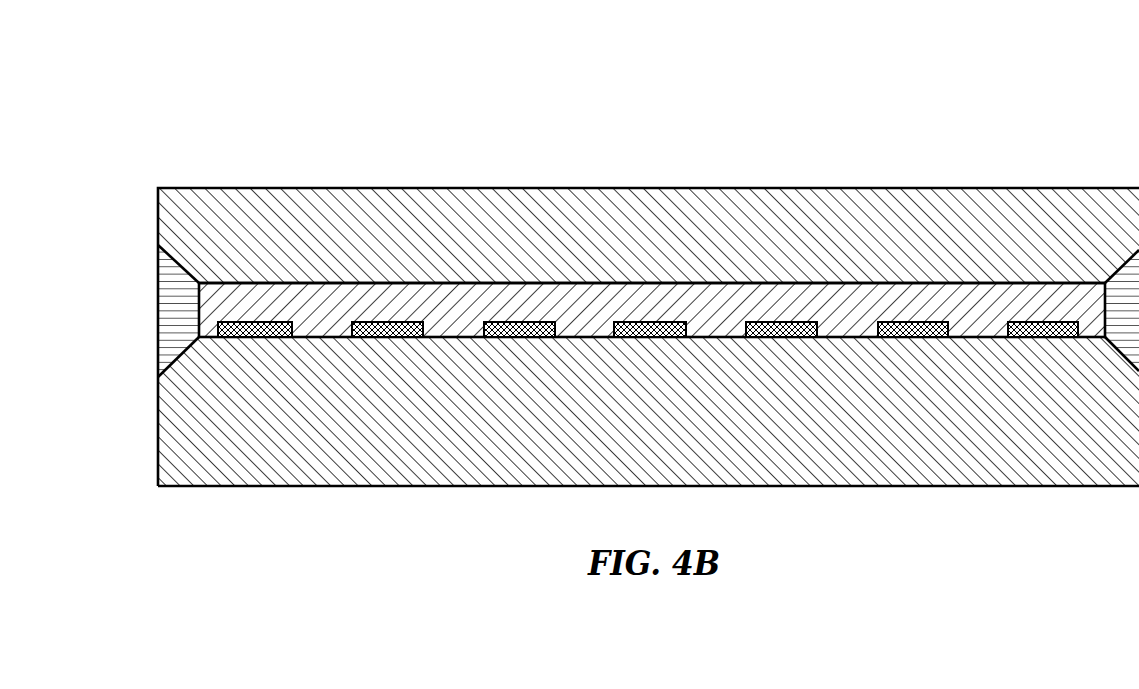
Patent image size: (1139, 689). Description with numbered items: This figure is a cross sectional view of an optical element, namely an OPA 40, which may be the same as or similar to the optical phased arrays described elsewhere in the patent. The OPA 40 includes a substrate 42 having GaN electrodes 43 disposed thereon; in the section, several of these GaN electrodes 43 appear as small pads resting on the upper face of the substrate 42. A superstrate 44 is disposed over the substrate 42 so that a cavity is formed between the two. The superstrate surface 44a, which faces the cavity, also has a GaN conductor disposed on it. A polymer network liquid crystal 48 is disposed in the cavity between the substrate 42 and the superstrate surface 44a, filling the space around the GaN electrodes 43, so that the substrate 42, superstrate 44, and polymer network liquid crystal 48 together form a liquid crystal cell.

The OPA 40 is at (614, 258).
The substrate 42 is at (182, 442).
The GaN electrodes 43 is at (260, 322).
The superstrate 44 is at (192, 222).
The superstrate surface 44a is at (553, 284).
The polymer network liquid crystal 48 is at (1082, 295).